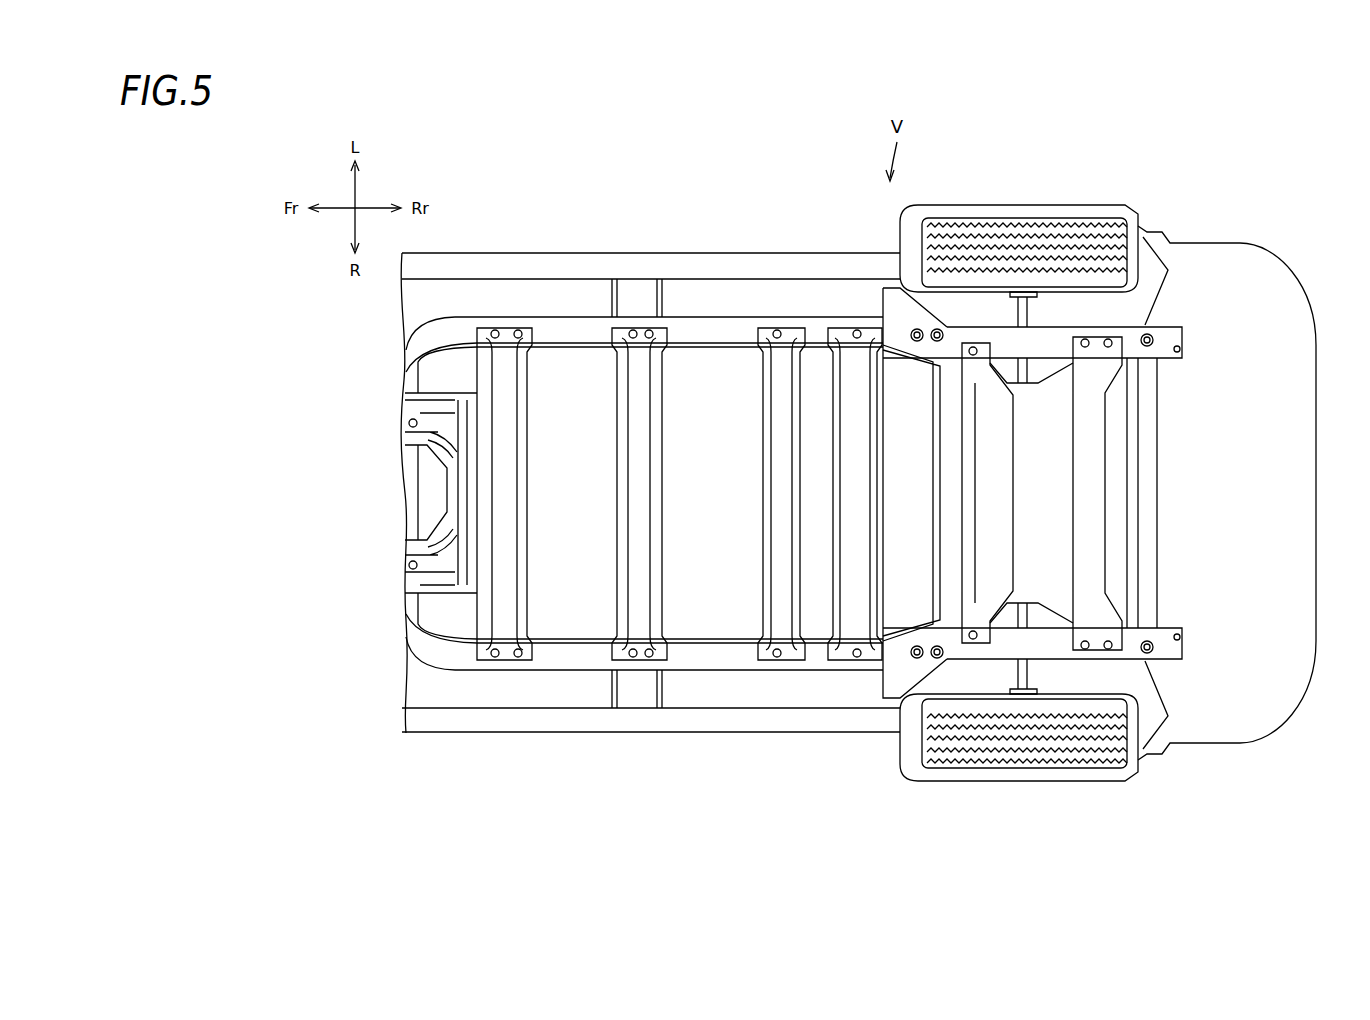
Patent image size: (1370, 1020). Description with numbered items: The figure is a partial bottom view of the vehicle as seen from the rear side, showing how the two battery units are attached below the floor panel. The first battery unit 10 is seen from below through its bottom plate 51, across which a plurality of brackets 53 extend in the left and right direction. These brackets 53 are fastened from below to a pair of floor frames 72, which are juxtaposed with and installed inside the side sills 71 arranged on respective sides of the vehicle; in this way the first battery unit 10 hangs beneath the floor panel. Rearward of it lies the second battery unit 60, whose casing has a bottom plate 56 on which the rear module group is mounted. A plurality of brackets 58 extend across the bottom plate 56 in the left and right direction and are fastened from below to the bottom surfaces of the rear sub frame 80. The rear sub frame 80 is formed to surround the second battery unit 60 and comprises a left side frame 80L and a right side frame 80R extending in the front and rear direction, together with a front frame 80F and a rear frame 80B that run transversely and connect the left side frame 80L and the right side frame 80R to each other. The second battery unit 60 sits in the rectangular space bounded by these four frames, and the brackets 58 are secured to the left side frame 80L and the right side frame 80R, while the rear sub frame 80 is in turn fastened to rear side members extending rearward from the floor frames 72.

The first battery unit 10 is at (412, 616).
The bottom plate 51 is at (722, 405).
The brackets 53 is at (623, 335).
The bottom plate 56 is at (1040, 430).
The brackets 58 is at (1097, 367).
The second battery unit 60 is at (1131, 467).
The side sills 71 is at (634, 265).
The floor frames 72 is at (688, 330).
The rear sub frame 80 is at (1159, 500).
The left side frame 80L is at (1183, 340).
The right side frame 80R is at (1183, 646).
The front frame 80F is at (950, 533).
The rear frame 80B is at (1150, 565).